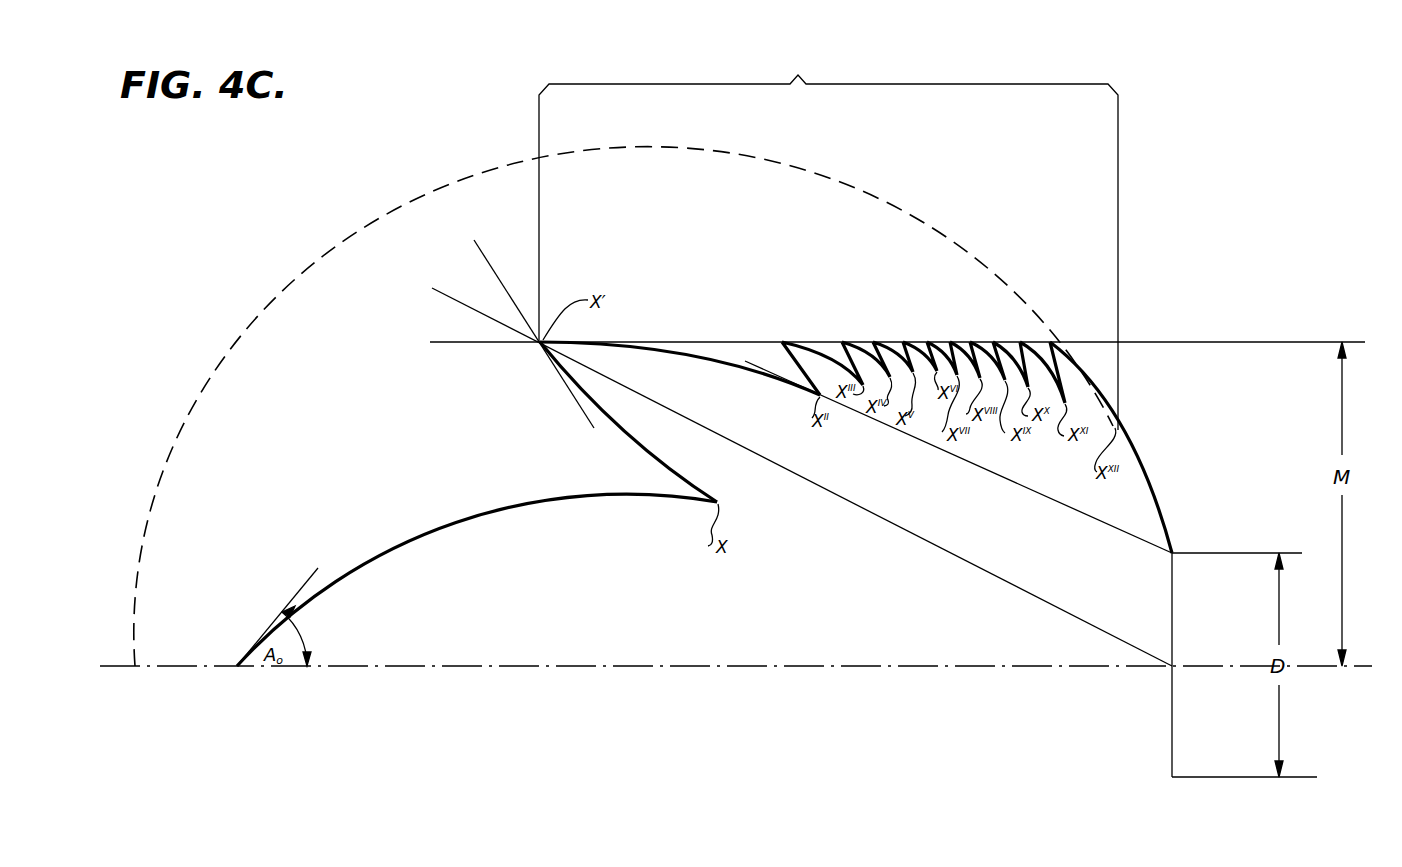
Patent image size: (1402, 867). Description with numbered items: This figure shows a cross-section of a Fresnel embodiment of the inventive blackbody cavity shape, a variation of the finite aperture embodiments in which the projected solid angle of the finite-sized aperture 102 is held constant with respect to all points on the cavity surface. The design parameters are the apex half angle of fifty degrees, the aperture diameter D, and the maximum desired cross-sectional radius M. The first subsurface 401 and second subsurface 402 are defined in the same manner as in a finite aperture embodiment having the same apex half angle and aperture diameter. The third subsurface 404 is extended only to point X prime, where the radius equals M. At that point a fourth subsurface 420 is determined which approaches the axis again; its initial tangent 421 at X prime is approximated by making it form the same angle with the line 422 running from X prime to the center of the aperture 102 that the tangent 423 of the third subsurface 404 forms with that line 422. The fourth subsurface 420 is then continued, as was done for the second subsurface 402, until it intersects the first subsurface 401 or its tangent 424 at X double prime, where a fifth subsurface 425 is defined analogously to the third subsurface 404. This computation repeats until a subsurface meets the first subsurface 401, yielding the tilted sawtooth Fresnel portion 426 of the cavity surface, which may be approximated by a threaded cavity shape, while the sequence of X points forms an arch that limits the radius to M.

The aperture 102 is at (1172, 744).
The first subsurface 401 is at (1157, 500).
The second subsurface 402 is at (469, 515).
The third subsurface 404 is at (638, 448).
The fourth subsurface 420 is at (719, 356).
The initial tangent 421 is at (497, 343).
The line from X prime to the center of the aperture 422 is at (858, 508).
The tangent of the third subsurface 423 is at (481, 258).
The tangent of the first subsurface 424 is at (1000, 477).
The fifth subsurface 425 is at (786, 353).
The Fresnel portion 426 is at (798, 75).